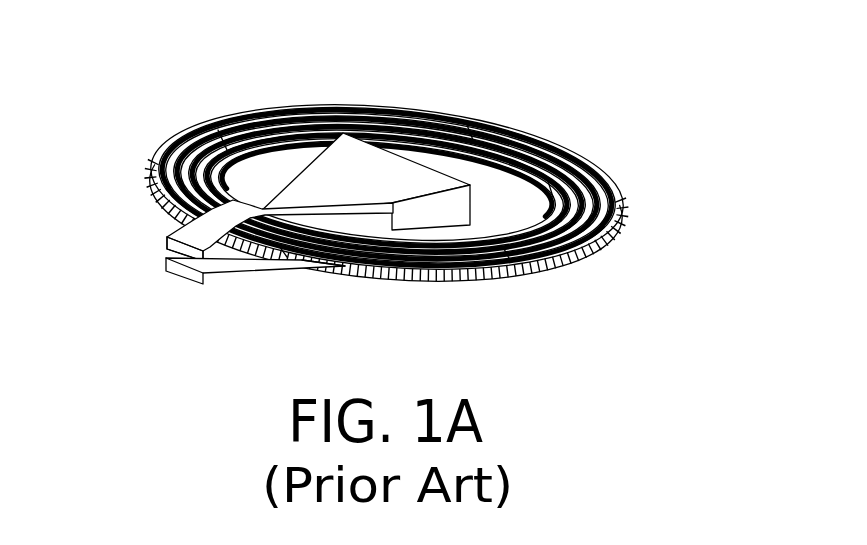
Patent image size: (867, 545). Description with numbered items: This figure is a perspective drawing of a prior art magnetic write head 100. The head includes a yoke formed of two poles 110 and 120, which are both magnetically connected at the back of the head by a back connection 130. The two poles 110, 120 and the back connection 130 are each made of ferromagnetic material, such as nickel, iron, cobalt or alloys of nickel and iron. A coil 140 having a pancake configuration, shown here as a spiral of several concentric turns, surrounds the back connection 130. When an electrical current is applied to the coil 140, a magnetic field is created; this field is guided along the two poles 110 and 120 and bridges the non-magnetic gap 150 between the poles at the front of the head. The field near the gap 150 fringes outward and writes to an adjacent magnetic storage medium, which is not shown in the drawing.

The prior art coil assembly 100 is at (408, 235).
The pole 110 is at (167, 238).
The pole 120 is at (185, 278).
The back connection 130 is at (318, 150).
The coil 140 is at (441, 180).
The non-magnetic gap 150 is at (167, 253).